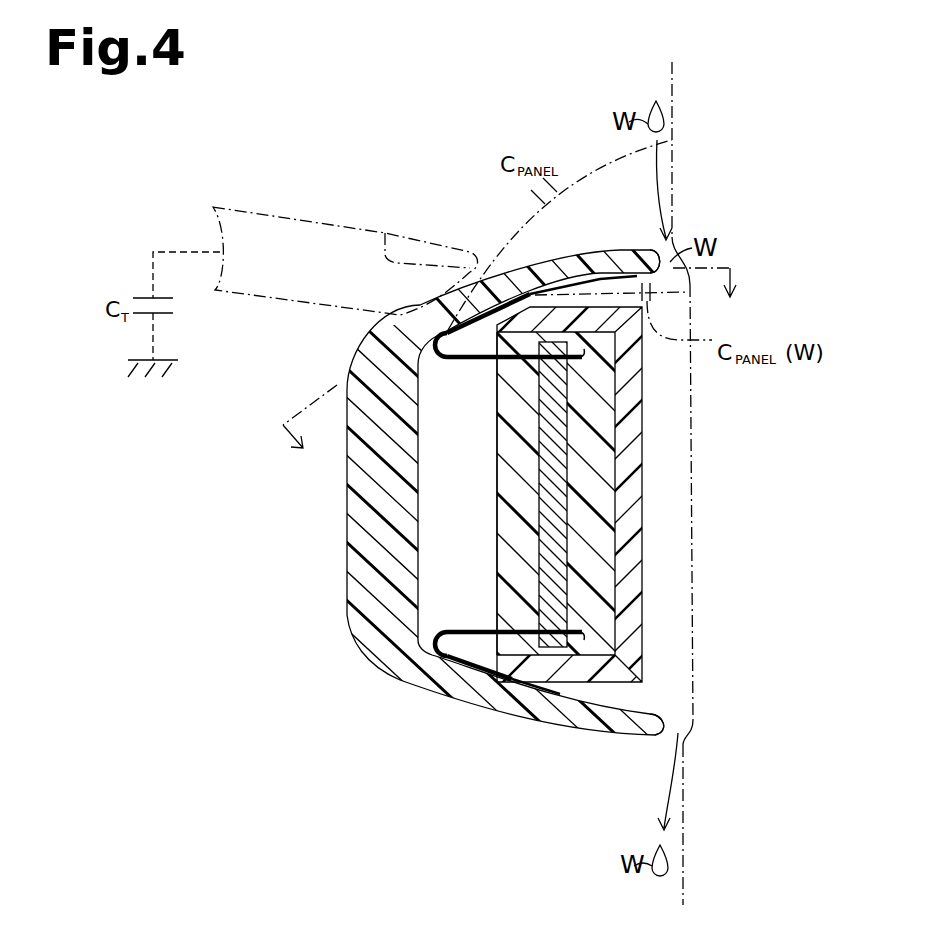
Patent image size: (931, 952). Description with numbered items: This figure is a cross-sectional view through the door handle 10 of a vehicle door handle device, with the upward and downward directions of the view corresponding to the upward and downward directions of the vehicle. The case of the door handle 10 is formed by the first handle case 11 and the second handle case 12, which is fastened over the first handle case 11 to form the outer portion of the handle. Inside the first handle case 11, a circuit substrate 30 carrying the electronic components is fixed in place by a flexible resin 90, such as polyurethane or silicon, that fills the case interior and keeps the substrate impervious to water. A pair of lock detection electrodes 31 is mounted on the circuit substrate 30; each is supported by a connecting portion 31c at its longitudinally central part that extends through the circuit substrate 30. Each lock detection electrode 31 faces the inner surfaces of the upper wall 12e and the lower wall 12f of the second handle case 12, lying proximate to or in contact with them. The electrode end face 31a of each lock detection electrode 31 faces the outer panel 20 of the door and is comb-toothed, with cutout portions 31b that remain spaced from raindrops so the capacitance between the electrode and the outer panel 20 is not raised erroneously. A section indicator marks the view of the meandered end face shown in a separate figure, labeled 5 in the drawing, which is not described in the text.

The door handle 10 is at (275, 518).
The first handle case 11 is at (643, 384).
The second handle case 12 is at (346, 572).
The upper wall 12e is at (574, 263).
The lower wall 12f is at (620, 727).
The outer panel 20 is at (672, 80).
The circuit substrate 30 is at (557, 480).
The lock detection electrode 31 is at (511, 360).
The electrode end face 31a is at (537, 290).
The cutout portion 31b is at (453, 330).
The connecting portion 31c is at (455, 363).
The flexible resin 90 is at (503, 482).
The section line of FIG. 5 is at (509, 370).